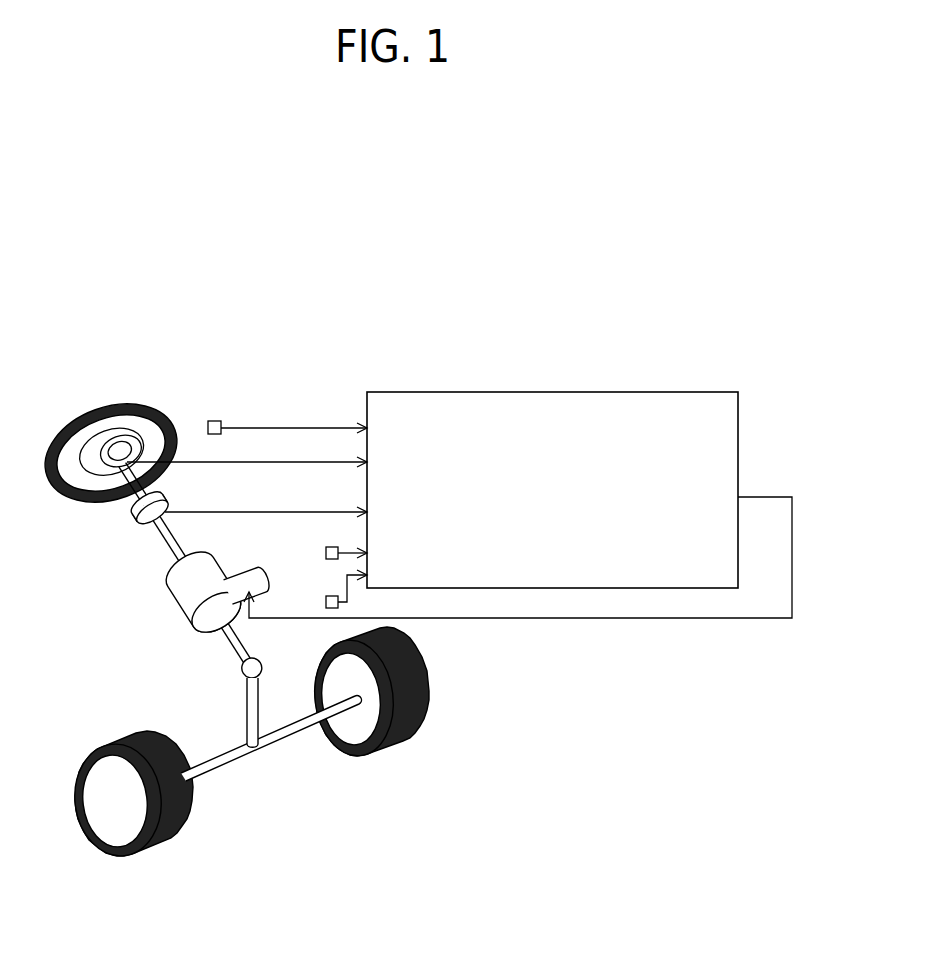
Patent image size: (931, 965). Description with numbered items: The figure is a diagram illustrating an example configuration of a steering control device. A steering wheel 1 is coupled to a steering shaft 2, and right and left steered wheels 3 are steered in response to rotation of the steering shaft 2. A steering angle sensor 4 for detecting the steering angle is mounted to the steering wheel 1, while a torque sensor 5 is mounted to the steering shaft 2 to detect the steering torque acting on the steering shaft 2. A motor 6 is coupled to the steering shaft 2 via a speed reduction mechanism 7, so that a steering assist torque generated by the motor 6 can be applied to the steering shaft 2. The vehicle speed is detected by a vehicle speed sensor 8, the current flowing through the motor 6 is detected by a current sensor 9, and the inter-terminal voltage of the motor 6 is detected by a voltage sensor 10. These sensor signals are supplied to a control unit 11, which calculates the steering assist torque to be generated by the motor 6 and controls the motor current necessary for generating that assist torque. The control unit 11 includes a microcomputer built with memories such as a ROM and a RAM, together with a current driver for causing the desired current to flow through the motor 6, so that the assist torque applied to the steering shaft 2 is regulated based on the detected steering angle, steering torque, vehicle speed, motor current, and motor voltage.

The steering wheel 1 is at (167, 409).
The steering shaft 2 is at (147, 537).
The steered wheels 3 is at (159, 735).
The steering angle sensor 4 is at (131, 451).
The torque sensor 5 is at (169, 505).
The motor 6 is at (238, 570).
The speed reduction mechanism 7 is at (174, 597).
The vehicle speed sensor 8 is at (218, 420).
The current sensor 9 is at (326, 553).
The voltage sensor 10 is at (326, 602).
The control unit 11 is at (738, 423).